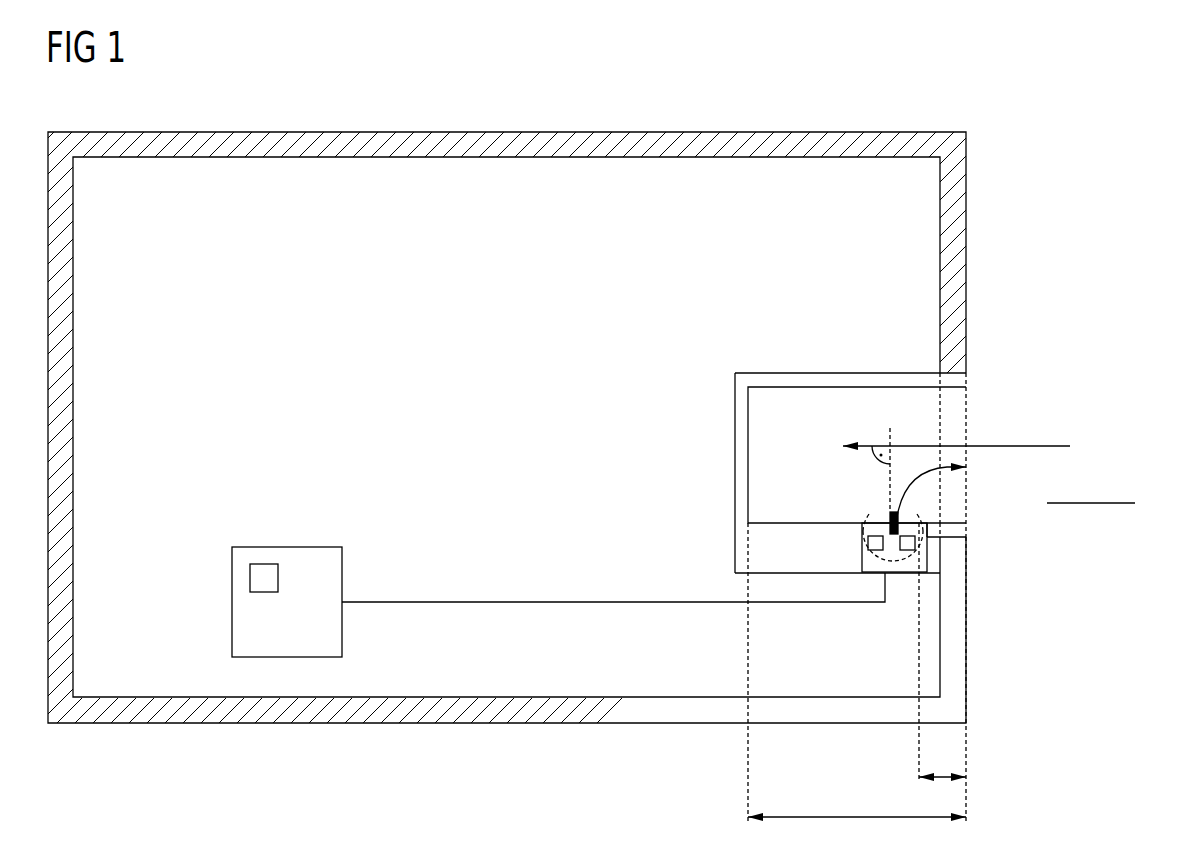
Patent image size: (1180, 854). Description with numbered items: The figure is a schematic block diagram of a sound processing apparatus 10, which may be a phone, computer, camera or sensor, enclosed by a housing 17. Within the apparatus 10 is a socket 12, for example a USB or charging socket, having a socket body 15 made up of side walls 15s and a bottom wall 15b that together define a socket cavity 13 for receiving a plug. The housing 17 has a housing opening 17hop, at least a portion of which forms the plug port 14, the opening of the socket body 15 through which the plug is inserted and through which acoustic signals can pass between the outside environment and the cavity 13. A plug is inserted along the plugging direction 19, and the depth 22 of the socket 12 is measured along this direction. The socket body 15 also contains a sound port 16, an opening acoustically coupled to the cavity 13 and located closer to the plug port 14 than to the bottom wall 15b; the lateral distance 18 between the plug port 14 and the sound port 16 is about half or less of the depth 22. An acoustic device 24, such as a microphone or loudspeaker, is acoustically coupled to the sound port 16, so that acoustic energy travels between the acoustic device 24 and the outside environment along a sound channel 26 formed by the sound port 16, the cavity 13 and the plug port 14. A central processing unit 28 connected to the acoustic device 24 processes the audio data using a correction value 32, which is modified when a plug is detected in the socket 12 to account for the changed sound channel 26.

The sound processing apparatus 10 is at (308, 103).
The socket 12 is at (853, 360).
The socket cavity 13 is at (820, 410).
The plug port 14 is at (955, 417).
The socket body 15 is at (666, 343).
The side walls 15s is at (772, 378).
The bottom wall 15b is at (735, 462).
The sound port 16 is at (908, 522).
The housing 17 is at (720, 147).
The housing opening 17hop is at (966, 375).
The lateral distance 18 is at (940, 775).
The plugging direction 19 is at (1025, 440).
The depth 22 is at (857, 815).
The acoustic device 24 is at (893, 577).
The sound channel 26 is at (902, 482).
The central processing unit 28 is at (232, 602).
The correction value 32 is at (265, 593).